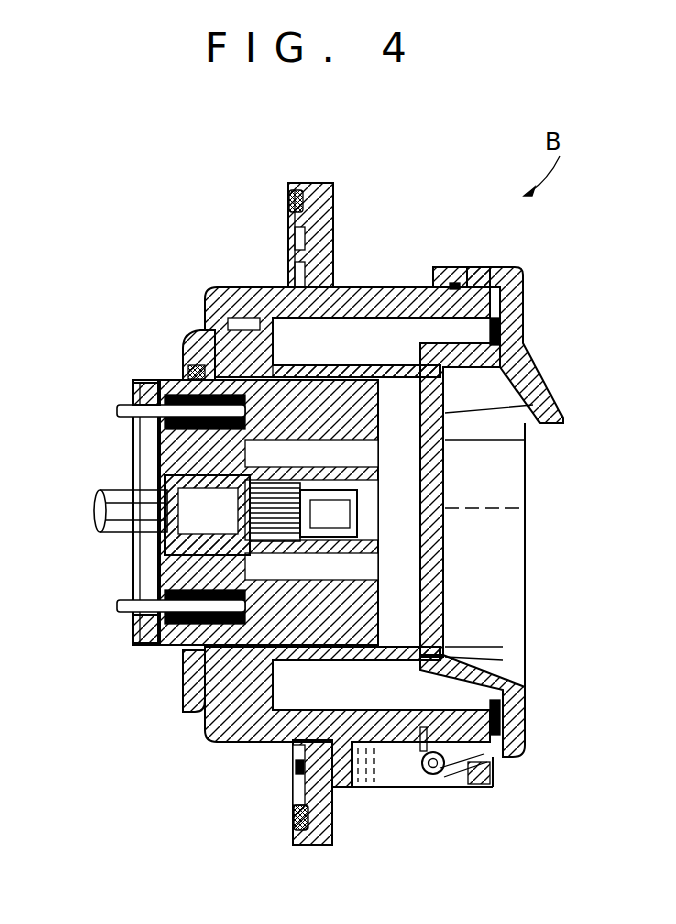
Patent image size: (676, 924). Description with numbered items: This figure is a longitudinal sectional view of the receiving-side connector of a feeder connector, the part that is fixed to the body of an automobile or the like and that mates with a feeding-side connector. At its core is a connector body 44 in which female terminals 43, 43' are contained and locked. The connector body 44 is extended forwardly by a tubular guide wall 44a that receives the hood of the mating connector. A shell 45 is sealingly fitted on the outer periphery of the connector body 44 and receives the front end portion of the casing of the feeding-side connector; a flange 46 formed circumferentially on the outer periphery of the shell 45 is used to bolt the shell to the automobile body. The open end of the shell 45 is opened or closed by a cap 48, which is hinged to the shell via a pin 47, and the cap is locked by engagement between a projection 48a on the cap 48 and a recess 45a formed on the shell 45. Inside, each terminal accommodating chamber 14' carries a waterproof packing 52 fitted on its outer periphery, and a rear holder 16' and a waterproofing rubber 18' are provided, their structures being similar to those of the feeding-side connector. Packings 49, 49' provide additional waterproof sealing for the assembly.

The packing 49 is at (267, 182).
The flange 46 is at (322, 210).
The shell 45 is at (357, 297).
The recess 45a is at (455, 284).
The projection 48a is at (468, 268).
The cap 48 is at (525, 528).
The pin 47 is at (437, 770).
The connector body 44 is at (183, 690).
The tubular guide wall 44a is at (345, 360).
The waterproof packing 52 is at (215, 328).
The packing 49' is at (150, 357).
The rear holder 16' is at (96, 512).
The waterproofing rubber 18' is at (141, 509).
The terminal accommodating chamber 14' is at (121, 540).
The female terminal 43 is at (263, 768).
The female terminal 43' is at (270, 765).